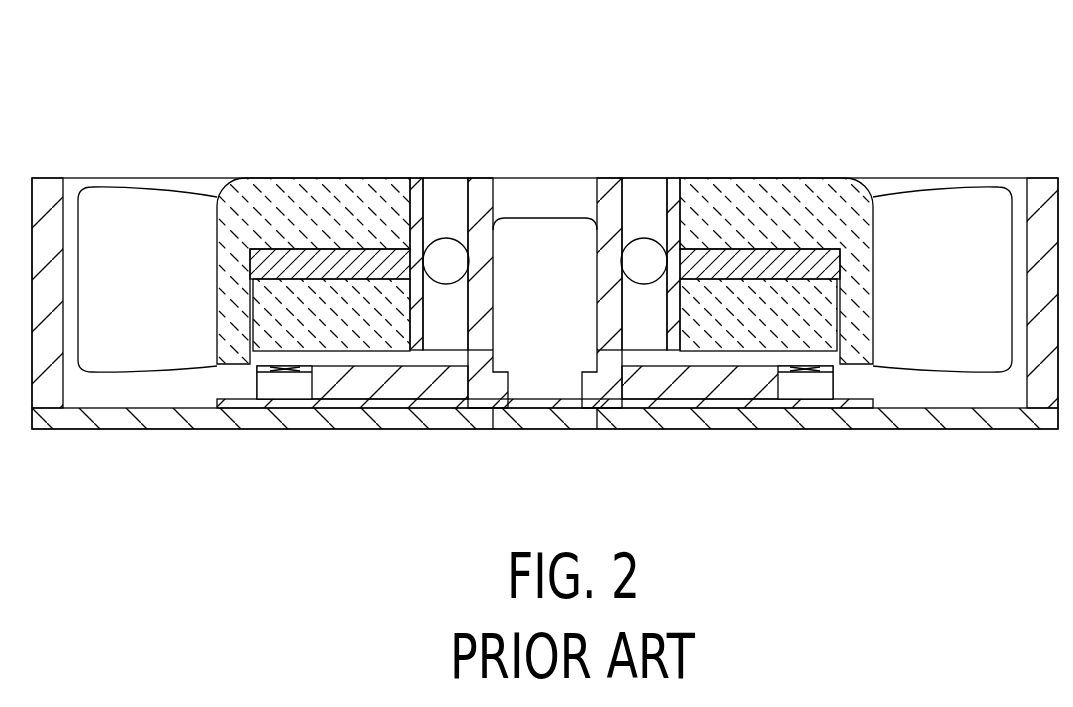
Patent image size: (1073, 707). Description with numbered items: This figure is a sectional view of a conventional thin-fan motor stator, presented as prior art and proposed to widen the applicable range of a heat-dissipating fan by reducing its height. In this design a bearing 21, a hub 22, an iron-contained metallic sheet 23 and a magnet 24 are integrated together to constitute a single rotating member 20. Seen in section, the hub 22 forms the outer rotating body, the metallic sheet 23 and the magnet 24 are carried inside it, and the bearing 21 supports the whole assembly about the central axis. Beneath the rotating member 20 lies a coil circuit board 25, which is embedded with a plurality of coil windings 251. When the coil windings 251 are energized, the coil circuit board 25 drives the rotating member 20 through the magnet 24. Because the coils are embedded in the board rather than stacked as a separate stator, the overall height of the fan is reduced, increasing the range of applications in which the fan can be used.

The rotating member 20 is at (625, 122).
The bearing 21 is at (482, 178).
The hub 22 is at (873, 230).
The iron-contained metallic sheet 23 is at (753, 258).
The magnet 24 is at (827, 317).
The coil circuit board 25 is at (413, 393).
The coil windings 251 is at (286, 374).